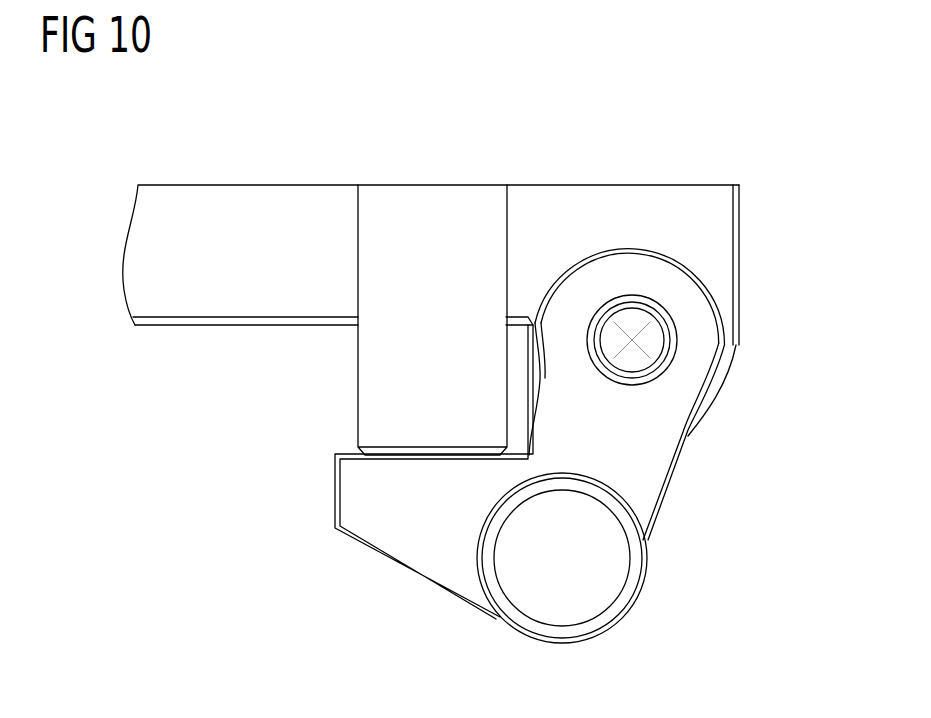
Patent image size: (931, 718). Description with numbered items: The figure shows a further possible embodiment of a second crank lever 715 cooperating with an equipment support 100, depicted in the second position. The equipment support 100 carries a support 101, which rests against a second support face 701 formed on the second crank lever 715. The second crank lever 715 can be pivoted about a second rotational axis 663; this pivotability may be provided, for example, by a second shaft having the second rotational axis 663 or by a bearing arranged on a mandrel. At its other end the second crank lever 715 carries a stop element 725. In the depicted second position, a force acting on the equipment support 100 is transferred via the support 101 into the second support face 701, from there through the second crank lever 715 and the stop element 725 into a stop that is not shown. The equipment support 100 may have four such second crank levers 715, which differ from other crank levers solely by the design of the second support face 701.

The equipment support 100 is at (268, 270).
The support 101 is at (458, 433).
The second support face 701 is at (406, 458).
The second crank lever 715 is at (633, 445).
The stop element 725 is at (588, 567).
The second rotational axis 663 is at (632, 340).